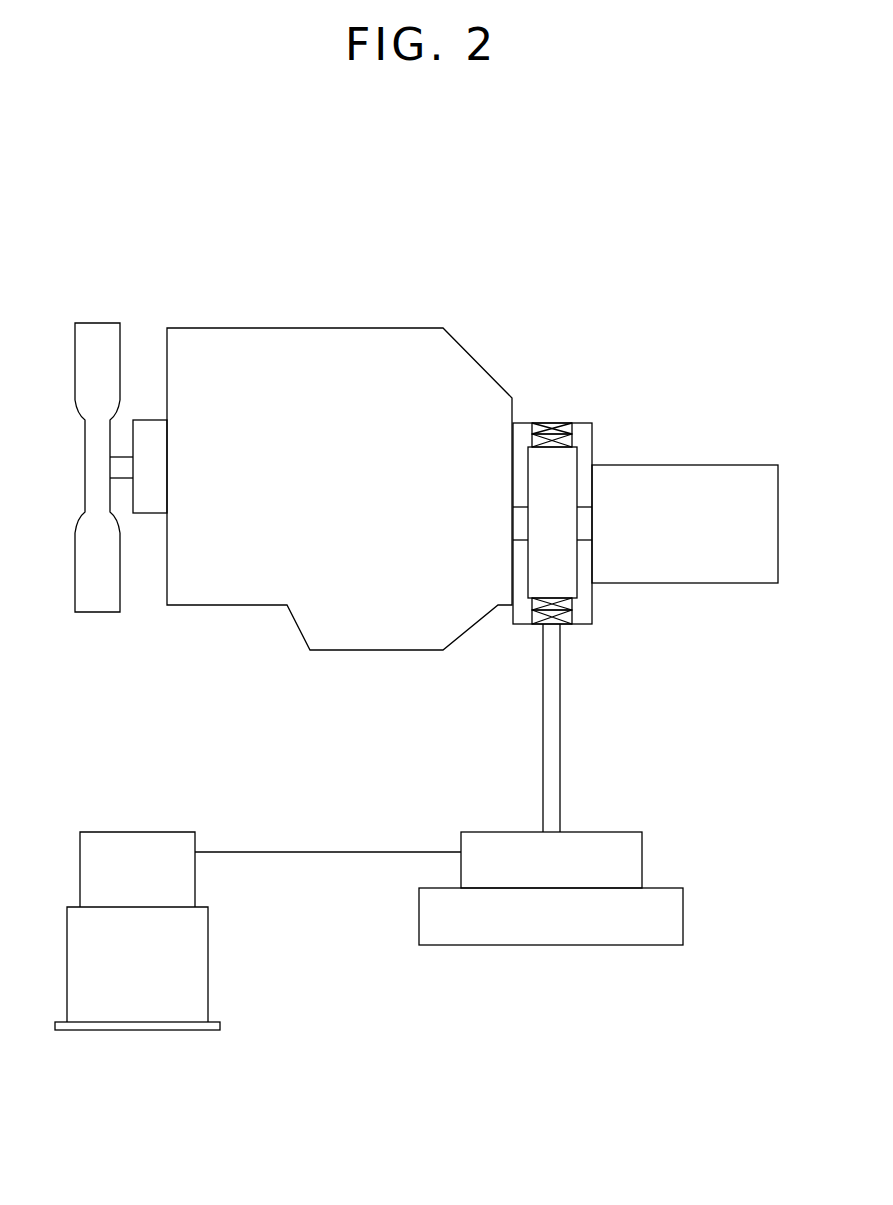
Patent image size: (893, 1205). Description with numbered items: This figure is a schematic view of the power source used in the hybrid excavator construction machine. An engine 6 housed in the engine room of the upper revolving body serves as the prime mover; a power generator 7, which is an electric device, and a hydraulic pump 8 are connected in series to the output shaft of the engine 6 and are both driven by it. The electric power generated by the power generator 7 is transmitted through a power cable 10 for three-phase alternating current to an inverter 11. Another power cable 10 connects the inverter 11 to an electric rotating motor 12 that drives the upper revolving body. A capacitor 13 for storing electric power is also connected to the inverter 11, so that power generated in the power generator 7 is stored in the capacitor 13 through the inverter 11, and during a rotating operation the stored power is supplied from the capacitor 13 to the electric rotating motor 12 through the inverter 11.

The engine 6 is at (348, 346).
The power generator 7 is at (580, 437).
The hydraulic pump 8 is at (718, 478).
The power cable 10 is at (545, 730).
The inverter 11 is at (620, 849).
The electric rotating motor 12 is at (171, 843).
The capacitor 13 is at (667, 903).